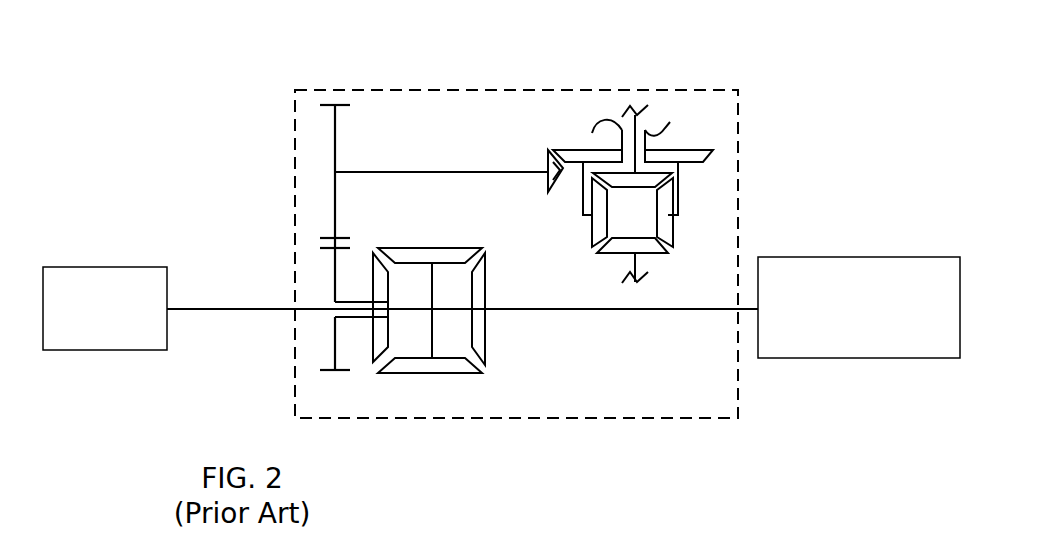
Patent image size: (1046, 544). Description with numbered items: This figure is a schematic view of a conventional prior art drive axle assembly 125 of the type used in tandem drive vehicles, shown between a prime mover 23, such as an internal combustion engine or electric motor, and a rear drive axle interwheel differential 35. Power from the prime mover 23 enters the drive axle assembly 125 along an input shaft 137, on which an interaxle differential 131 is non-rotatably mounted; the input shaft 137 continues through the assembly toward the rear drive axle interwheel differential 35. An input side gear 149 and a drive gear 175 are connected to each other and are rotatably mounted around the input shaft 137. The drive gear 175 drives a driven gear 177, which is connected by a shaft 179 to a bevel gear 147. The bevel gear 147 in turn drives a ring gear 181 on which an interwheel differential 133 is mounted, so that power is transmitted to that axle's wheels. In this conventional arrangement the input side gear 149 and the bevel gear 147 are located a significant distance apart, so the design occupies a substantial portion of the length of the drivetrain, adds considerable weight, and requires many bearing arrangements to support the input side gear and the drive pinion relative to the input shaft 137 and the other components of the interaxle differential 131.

The prime mover 23 is at (100, 267).
The input shaft 137 is at (233, 307).
The drive axle assembly 125 is at (509, 419).
The driven gear 177 is at (337, 105).
The shaft 179 is at (431, 172).
The bevel gear 147 is at (549, 152).
The ring gear 181 is at (703, 162).
The interwheel differential 133 is at (668, 238).
The interaxle differential 131 is at (447, 248).
The input side gear 149 is at (372, 350).
The drive gear 175 is at (340, 372).
The rear drive axle interwheel differential 35 is at (858, 359).